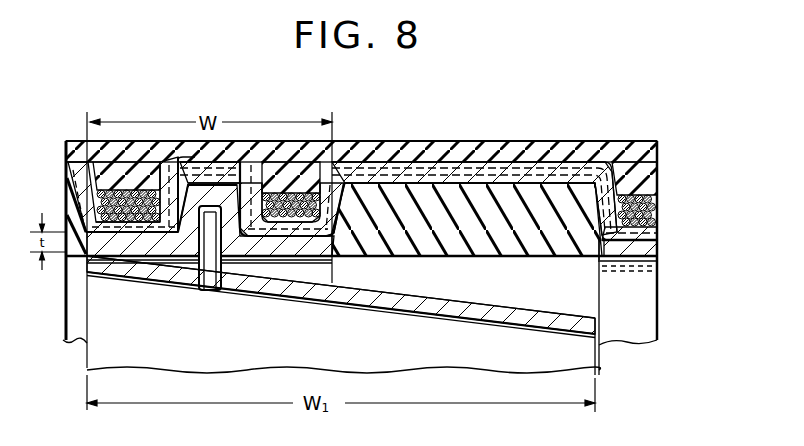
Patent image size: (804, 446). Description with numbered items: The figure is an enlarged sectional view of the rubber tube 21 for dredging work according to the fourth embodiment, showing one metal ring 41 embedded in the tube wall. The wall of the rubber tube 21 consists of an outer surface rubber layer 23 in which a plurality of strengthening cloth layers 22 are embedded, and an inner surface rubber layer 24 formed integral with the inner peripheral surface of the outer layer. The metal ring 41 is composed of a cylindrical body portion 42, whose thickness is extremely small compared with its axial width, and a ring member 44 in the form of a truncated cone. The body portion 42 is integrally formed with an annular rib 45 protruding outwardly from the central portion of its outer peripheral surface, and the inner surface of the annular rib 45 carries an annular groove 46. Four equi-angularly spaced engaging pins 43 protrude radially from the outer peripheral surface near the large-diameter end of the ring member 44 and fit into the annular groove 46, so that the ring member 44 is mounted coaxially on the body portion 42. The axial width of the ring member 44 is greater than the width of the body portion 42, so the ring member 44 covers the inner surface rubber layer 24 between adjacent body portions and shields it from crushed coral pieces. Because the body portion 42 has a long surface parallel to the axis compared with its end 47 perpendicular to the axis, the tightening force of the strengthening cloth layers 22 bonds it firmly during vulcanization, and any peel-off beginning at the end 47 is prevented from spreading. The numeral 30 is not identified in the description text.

The rubber tube 21 is at (122, 142).
The strengthening cloth layers 22 is at (478, 170).
The outer surface rubber layer 23 is at (379, 158).
The inner surface rubber layer 24 is at (482, 236).
The bead-filled groove 30 is at (645, 192).
The metal ring 41 is at (132, 194).
The cylindrical body portion 42 is at (322, 243).
The engaging pin 43 is at (205, 240).
The ring member 44 is at (357, 298).
The annular rib 45 is at (245, 186).
The annular groove 46 is at (207, 206).
The end 47 is at (72, 233).